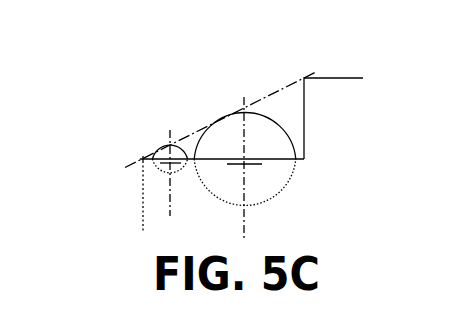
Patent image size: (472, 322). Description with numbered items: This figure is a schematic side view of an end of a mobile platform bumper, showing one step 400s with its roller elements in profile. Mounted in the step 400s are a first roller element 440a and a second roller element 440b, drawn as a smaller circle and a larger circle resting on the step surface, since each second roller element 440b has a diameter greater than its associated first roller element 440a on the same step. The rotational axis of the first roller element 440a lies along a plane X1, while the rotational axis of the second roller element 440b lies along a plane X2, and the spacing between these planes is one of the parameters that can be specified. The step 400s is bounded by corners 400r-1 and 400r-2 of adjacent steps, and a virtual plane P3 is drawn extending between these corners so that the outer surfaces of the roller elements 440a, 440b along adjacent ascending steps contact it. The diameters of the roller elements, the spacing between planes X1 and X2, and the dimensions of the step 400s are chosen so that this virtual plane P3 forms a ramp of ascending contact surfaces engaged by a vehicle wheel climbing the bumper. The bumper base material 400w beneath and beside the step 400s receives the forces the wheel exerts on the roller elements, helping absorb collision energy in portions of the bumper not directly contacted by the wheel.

The first roller element 440a is at (162, 143).
The second roller element 440b is at (263, 135).
The corner 400r-1 is at (143, 159).
The corner 400r-2 is at (304, 76).
The step 400s is at (272, 160).
The bumper base material 400w is at (315, 200).
The virtual plane P3 is at (200, 131).
The plane X1 is at (171, 207).
The plane X2 is at (244, 222).